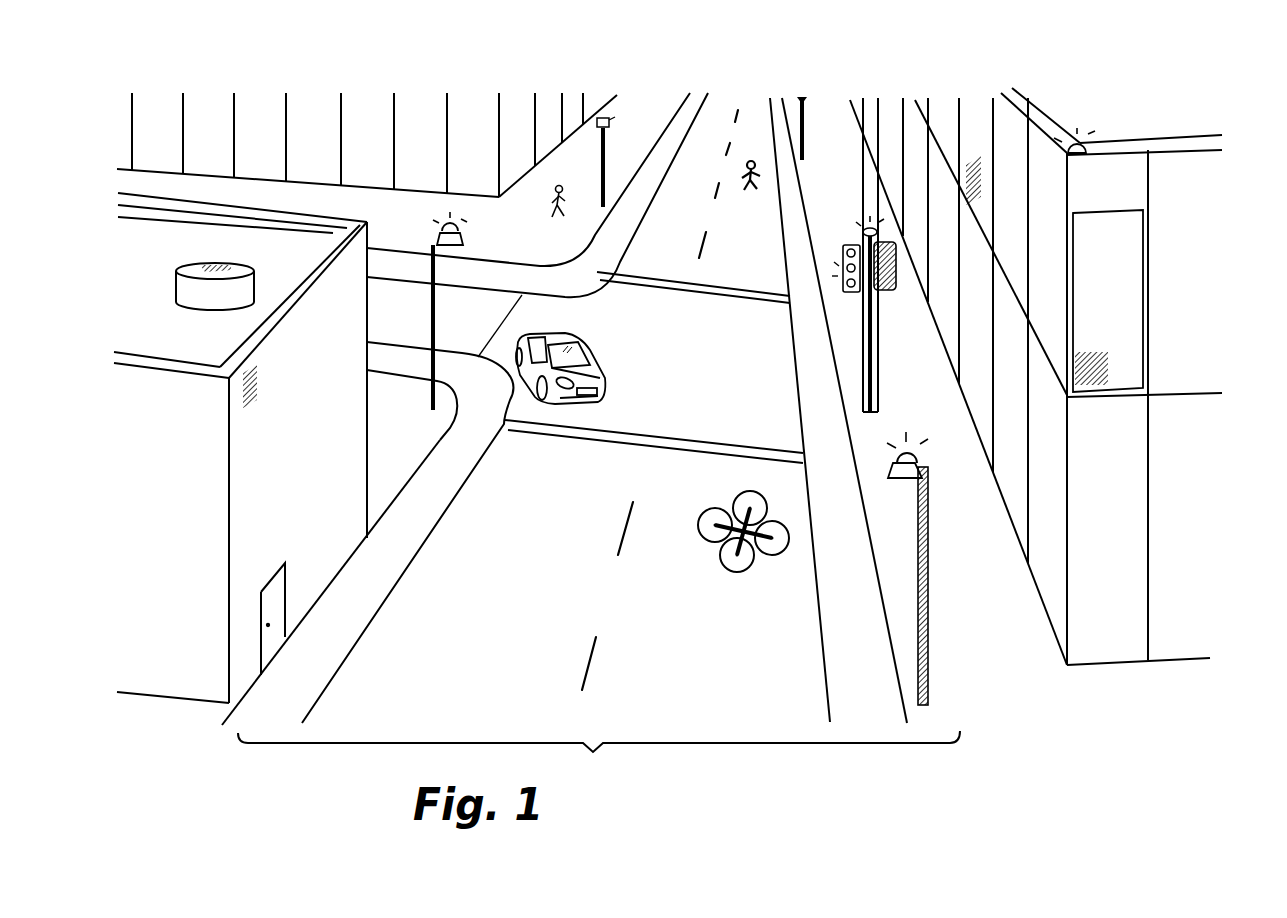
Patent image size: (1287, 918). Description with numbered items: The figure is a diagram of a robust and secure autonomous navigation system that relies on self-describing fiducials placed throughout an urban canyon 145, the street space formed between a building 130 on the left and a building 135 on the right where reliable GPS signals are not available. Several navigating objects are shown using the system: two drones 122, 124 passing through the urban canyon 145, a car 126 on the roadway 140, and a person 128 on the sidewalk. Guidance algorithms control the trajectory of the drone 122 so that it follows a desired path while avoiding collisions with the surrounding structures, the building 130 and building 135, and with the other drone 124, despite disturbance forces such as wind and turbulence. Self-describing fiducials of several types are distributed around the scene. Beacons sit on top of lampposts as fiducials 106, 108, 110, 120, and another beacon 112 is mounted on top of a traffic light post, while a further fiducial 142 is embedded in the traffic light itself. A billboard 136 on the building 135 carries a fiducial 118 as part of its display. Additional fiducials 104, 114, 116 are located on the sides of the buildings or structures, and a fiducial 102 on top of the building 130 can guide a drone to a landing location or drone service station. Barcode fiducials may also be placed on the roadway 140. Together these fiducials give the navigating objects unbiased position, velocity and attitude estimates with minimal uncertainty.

The self-describing fiducial 102 is at (203, 264).
The self-describing fiducial 104 is at (253, 395).
The beacon on lamppost 106 is at (447, 220).
The beacon on lamppost 108 is at (611, 122).
The beacon on lamppost 110 is at (799, 96).
The beacon on traffic light post 112 is at (872, 228).
The self-describing fiducial 114 is at (974, 168).
The self-describing fiducial 116 is at (1081, 140).
The self-describing fiducial 118 is at (1088, 352).
The beacon on lamppost 120 is at (917, 466).
The drone 122 is at (725, 575).
The drone 124 is at (750, 185).
The car 126 is at (588, 375).
The person 128 is at (557, 203).
The building 130 is at (197, 534).
The building 135 is at (1125, 534).
The billboard 136 is at (1128, 244).
The roadway 140 is at (495, 602).
The traffic light 142 is at (838, 292).
The urban canyon 145 is at (599, 759).